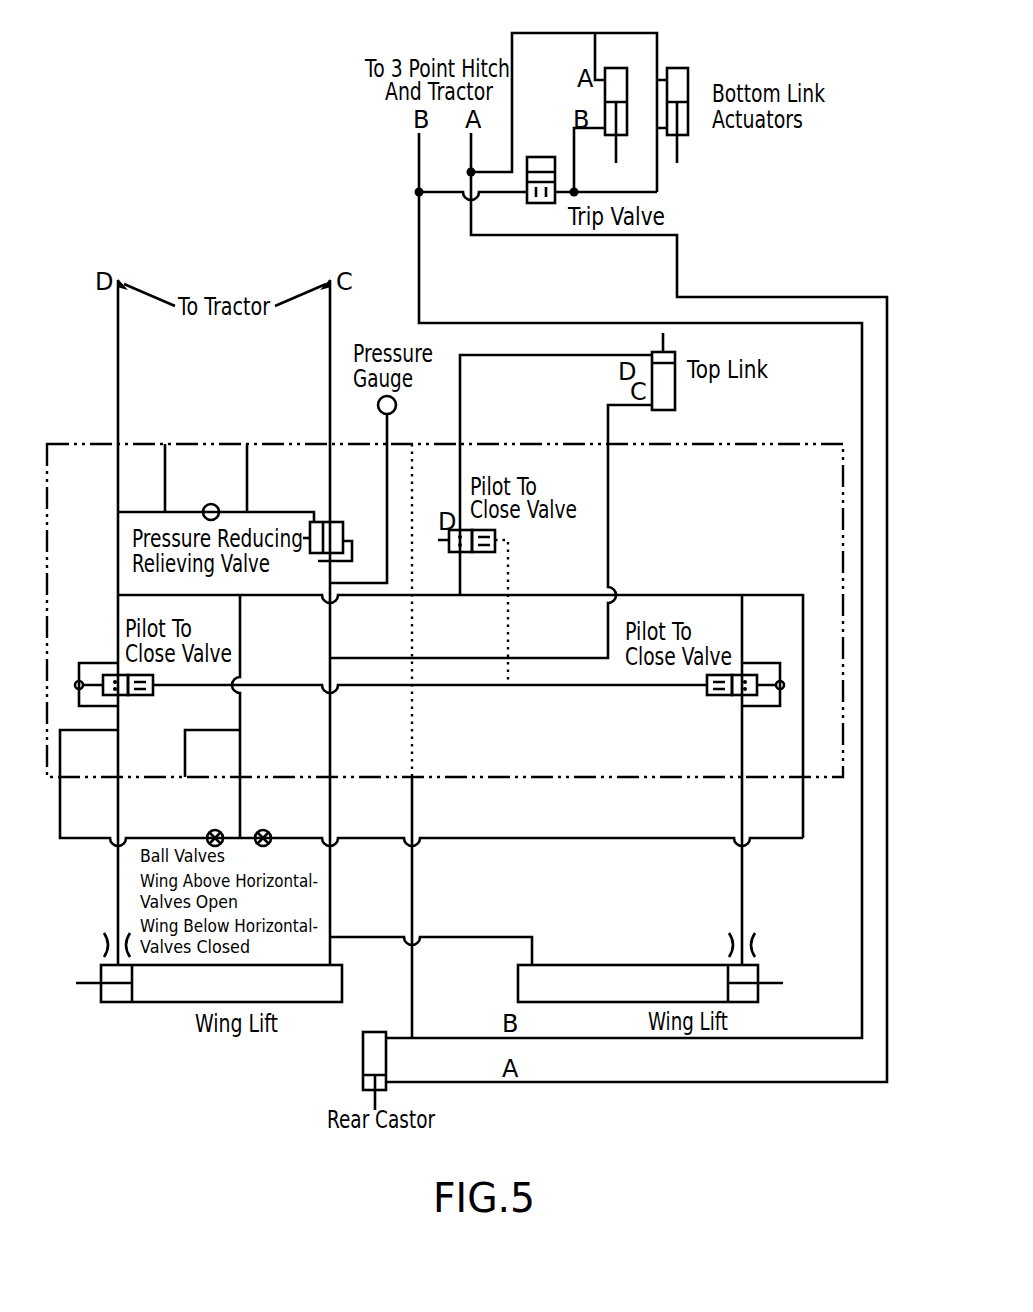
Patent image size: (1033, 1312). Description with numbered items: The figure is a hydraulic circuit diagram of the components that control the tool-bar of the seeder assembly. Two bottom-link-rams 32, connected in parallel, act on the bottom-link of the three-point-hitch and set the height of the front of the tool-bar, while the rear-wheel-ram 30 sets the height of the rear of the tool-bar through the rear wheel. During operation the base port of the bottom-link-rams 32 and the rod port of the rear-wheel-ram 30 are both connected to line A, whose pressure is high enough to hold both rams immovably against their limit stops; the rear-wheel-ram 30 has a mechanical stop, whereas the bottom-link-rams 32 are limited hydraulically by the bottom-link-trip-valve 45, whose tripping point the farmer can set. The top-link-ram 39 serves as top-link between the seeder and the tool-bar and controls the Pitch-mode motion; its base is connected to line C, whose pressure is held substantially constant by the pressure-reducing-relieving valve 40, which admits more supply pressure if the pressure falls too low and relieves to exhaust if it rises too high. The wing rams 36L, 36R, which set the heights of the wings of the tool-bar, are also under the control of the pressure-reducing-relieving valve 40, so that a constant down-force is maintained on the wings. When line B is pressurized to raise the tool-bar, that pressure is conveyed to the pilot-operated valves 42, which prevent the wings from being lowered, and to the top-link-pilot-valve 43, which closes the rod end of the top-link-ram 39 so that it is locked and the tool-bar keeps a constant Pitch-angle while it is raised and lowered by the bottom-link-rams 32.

The bottom-link-ram 32 is at (678, 75).
The bottom-link-trip-valve 45 is at (540, 203).
The top-link-ram 39 is at (675, 398).
The pressure-reducing-relieving valve 40 is at (343, 526).
The top-link-pilot-valve 43 is at (498, 530).
The pilot-operated valves 42 is at (128, 698).
The wing ram 36L is at (175, 993).
The wing ram 36R is at (565, 970).
The rear-wheel-ram 30 is at (370, 1037).